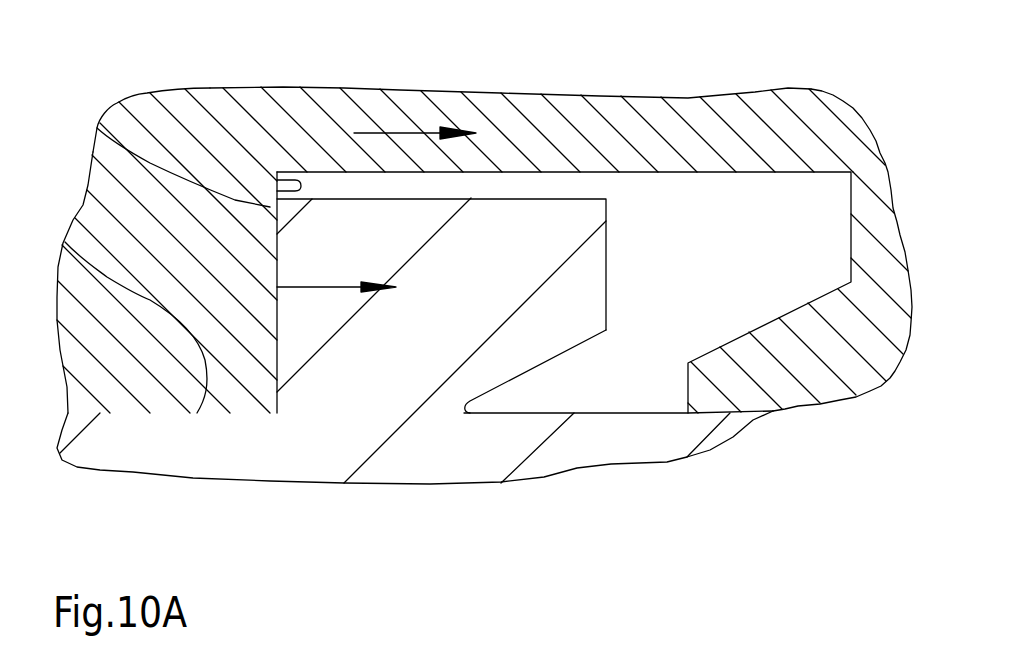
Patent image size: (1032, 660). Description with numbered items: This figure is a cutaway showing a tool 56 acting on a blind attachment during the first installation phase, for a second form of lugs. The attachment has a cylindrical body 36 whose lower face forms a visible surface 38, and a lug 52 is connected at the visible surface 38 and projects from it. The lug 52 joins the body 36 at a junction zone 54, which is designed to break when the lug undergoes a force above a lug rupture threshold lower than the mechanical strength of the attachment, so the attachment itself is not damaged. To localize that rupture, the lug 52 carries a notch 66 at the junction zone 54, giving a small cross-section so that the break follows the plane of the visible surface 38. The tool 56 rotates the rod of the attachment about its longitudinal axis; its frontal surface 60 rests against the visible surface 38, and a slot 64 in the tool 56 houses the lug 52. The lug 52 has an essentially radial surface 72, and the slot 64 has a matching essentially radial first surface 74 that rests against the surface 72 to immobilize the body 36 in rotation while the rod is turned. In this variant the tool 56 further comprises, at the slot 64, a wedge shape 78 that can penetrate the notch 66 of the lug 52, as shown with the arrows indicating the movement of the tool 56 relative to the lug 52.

The body 36 is at (608, 437).
The visible surface 38 is at (65, 242).
The lug 52 is at (524, 227).
The junction zone 54 is at (732, 211).
The tool 56 is at (367, 100).
The frontal surface 60 is at (128, 413).
The slot 64 is at (800, 200).
The notch 66 is at (576, 452).
The surface 72 is at (97, 128).
The surface 74 is at (230, 117).
The wedge shape 78 is at (833, 377).